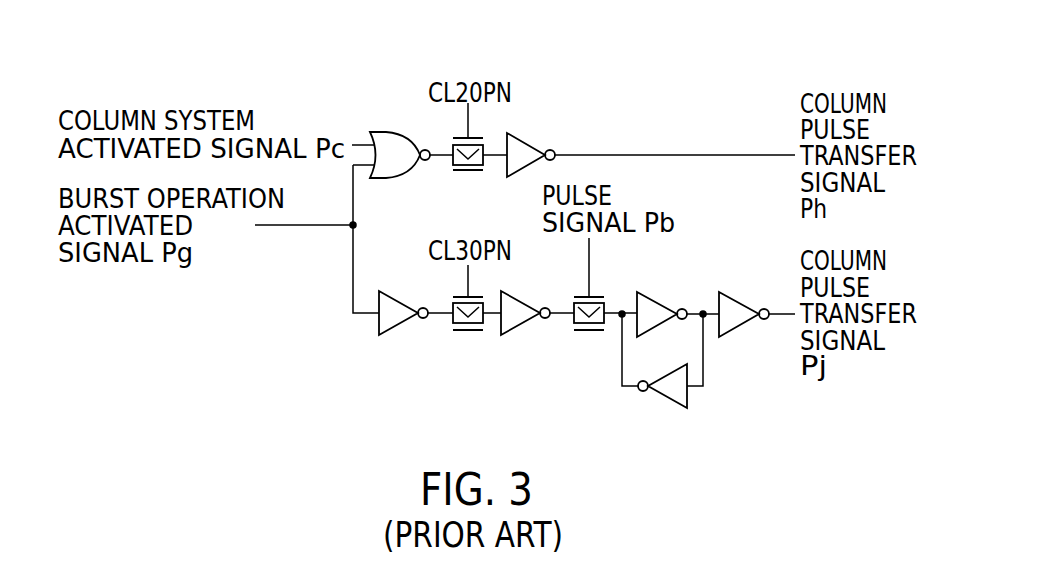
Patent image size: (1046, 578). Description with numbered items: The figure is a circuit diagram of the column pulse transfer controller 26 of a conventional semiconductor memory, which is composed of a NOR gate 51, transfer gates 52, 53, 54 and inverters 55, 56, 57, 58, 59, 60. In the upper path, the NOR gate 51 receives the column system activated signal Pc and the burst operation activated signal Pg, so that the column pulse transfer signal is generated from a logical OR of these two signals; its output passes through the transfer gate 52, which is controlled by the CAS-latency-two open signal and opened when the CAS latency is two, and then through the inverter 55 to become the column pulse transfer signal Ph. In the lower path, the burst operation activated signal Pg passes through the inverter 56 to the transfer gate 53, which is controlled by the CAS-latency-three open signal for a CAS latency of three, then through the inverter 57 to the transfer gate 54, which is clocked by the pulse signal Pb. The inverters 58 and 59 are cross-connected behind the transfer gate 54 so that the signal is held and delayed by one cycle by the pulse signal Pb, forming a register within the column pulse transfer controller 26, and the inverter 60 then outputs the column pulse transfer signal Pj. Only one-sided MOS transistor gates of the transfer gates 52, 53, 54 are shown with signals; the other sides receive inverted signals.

The column pulse transfer controller 26 is at (496, 58).
The NOR gate 51 is at (381, 129).
The transfer gate 52 is at (468, 173).
The transfer gate 53 is at (468, 333).
The transfer gate 54 is at (589, 333).
The inverter 55 is at (537, 143).
The inverter 56 is at (382, 290).
The inverter 57 is at (534, 296).
The inverter 58 is at (656, 300).
The inverter 59 is at (669, 399).
The inverter 60 is at (739, 300).